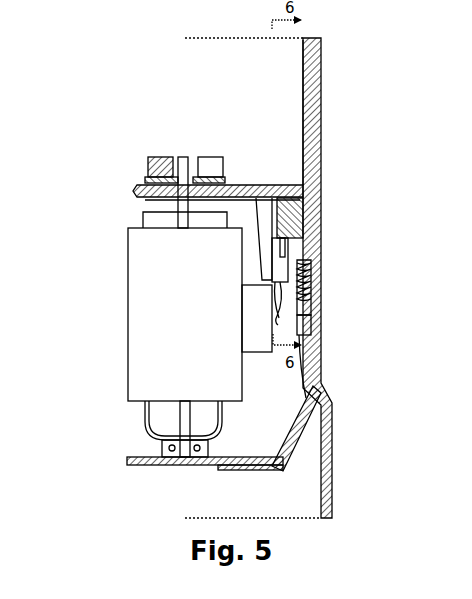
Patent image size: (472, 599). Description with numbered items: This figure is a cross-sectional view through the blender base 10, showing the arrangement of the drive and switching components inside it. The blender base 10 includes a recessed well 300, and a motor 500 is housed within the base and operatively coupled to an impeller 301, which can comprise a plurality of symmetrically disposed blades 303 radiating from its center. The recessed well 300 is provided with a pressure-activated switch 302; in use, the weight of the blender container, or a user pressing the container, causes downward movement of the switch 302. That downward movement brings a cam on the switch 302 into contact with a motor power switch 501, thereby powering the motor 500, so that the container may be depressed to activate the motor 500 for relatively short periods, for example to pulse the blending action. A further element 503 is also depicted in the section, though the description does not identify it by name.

The blender base 10 is at (322, 167).
The recessed well 300 is at (193, 87).
The impeller 301 is at (194, 150).
The pressure-activated switch 302 is at (302, 104).
The blade 303 is at (160, 155).
The motor 500 is at (145, 262).
The motor power switch 501 is at (281, 273).
The support bracket 503 is at (163, 203).